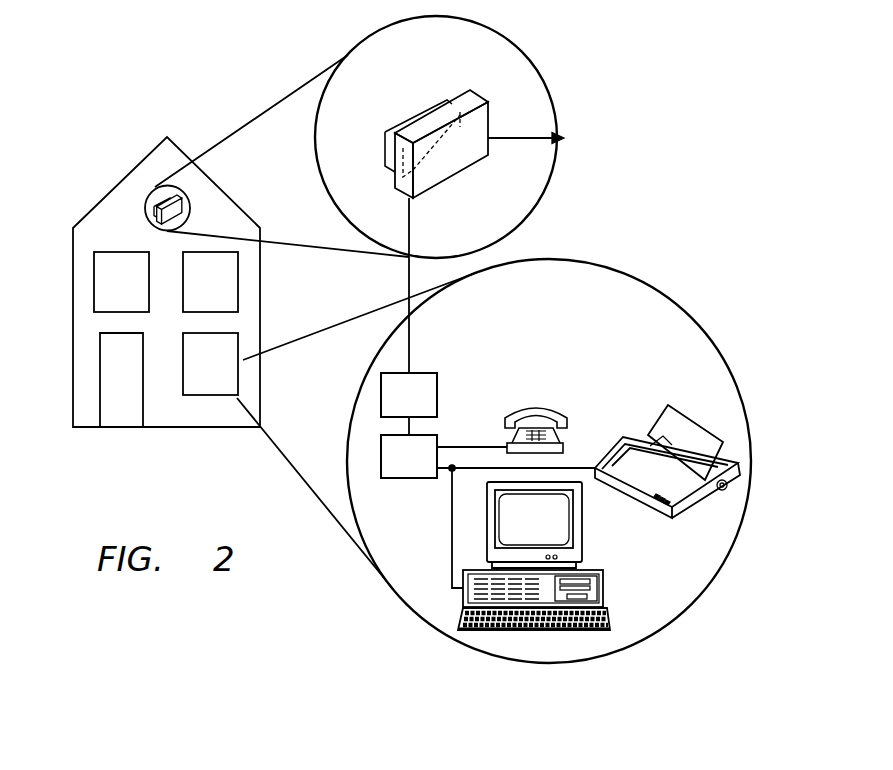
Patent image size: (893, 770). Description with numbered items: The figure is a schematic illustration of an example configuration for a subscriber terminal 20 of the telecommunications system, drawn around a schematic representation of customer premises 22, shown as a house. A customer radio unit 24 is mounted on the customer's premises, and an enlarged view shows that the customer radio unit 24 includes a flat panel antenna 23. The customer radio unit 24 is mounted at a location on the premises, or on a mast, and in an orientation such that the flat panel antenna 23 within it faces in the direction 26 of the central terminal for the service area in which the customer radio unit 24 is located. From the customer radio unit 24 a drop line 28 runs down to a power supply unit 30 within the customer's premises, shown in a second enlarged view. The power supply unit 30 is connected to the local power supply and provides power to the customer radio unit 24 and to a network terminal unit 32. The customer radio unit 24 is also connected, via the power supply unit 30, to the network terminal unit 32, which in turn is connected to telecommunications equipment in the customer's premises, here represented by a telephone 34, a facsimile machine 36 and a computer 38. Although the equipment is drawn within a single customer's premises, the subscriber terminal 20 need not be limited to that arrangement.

The subscriber terminal 20 is at (681, 160).
The customer premises 22 is at (118, 182).
The flat panel antenna 23 is at (407, 183).
The customer radio unit 24 is at (473, 97).
The direction of the central terminal 26 is at (507, 138).
The drop line 28 is at (405, 275).
The power supply unit 30 is at (438, 397).
The network terminal unit 32 is at (407, 482).
The telephone 34 is at (547, 410).
The facsimile machine 36 is at (643, 505).
The computer 38 is at (602, 588).